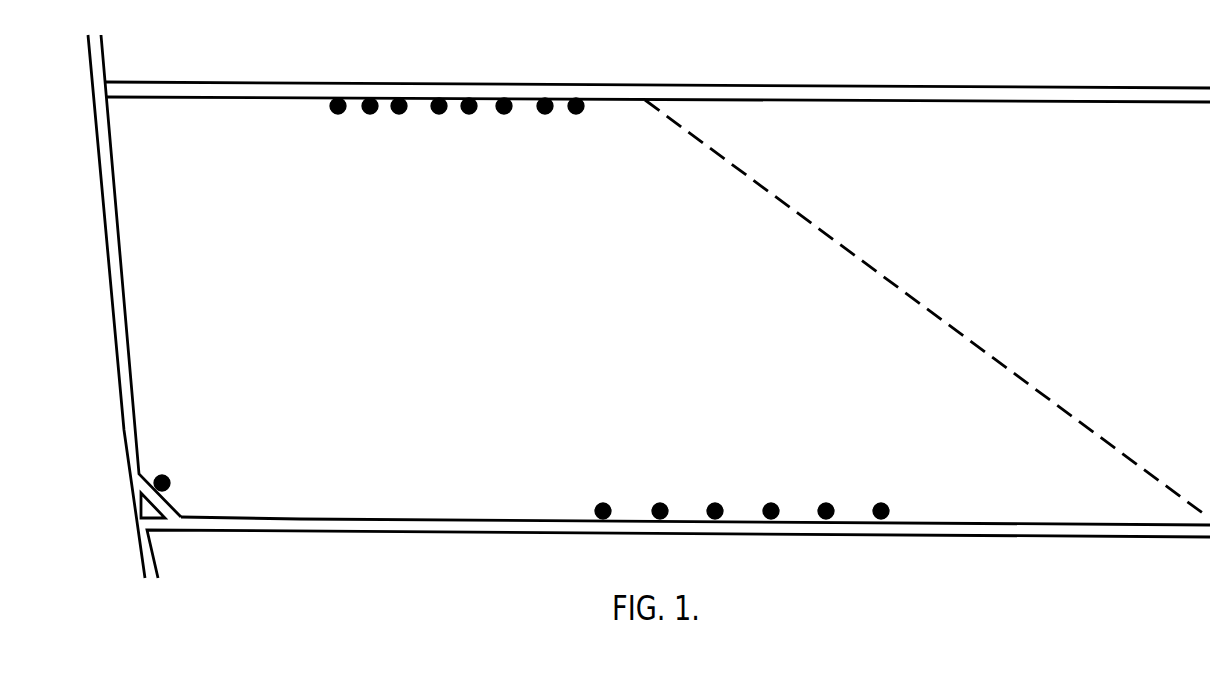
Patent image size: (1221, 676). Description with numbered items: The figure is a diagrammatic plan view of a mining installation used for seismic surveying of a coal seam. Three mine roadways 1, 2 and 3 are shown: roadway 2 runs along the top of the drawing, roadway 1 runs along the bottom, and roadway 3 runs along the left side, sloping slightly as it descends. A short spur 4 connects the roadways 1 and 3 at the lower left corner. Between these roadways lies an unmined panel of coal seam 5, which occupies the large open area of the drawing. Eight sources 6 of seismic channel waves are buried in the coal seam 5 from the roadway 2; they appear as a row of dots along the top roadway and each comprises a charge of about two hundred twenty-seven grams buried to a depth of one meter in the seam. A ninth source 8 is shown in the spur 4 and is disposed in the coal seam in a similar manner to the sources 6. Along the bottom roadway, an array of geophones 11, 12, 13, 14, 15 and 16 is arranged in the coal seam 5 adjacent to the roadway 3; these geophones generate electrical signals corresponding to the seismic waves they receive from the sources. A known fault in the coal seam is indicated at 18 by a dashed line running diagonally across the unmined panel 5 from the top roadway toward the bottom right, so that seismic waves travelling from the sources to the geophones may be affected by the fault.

The mine roadway 1 is at (310, 523).
The mine roadway 2 is at (963, 99).
The mine roadway 3 is at (115, 243).
The spur 4 is at (168, 502).
The unmined panel of coal seam 5 is at (495, 314).
The sources of seismic channel waves 6 is at (399, 113).
The ninth source 8 is at (163, 473).
The geophone 11 is at (603, 490).
The geophone 12 is at (660, 490).
The geophone 13 is at (715, 490).
The geophone 14 is at (771, 490).
The geophone 15 is at (826, 490).
The geophone 16 is at (881, 490).
The known fault 18 is at (935, 309).